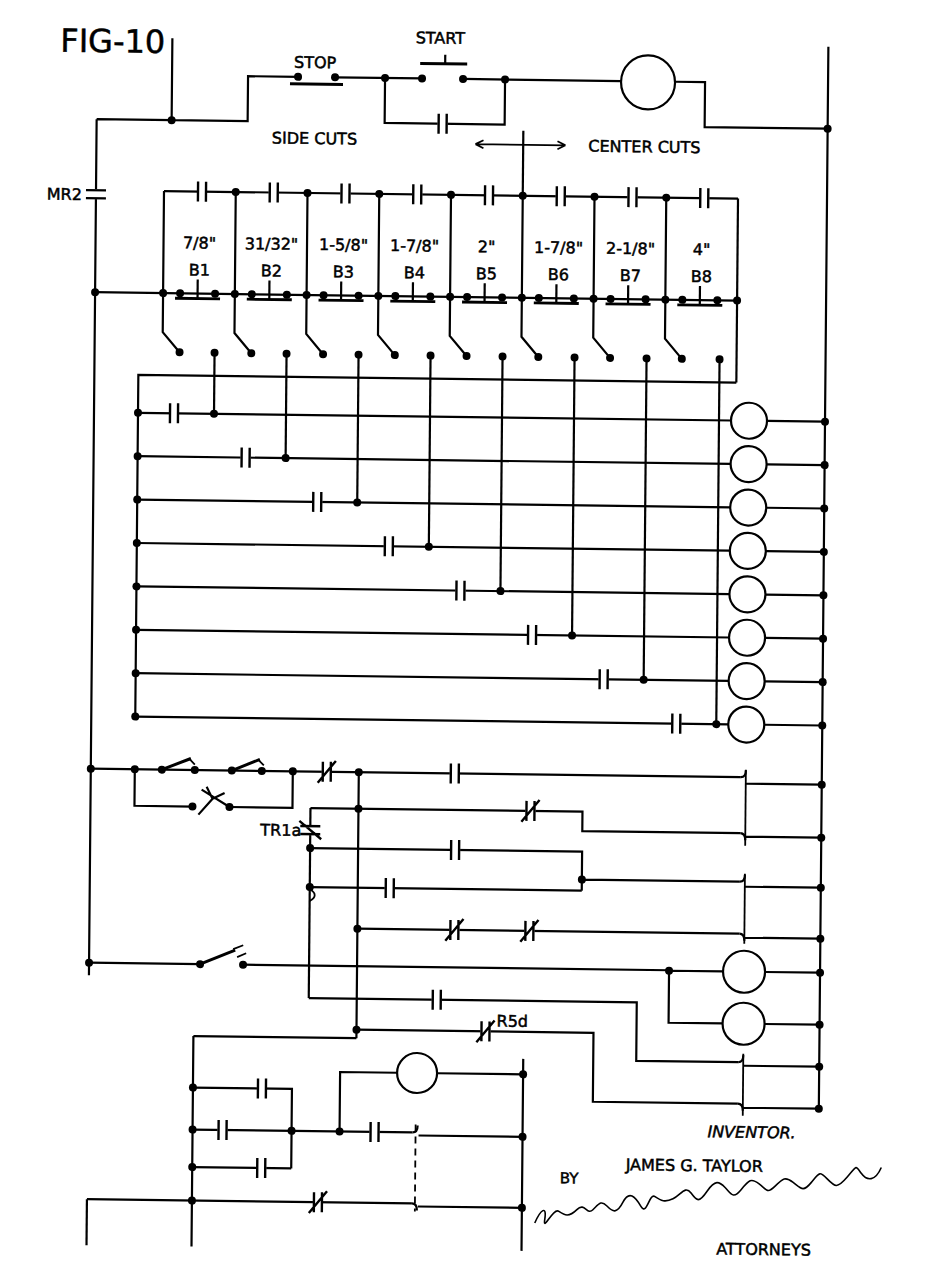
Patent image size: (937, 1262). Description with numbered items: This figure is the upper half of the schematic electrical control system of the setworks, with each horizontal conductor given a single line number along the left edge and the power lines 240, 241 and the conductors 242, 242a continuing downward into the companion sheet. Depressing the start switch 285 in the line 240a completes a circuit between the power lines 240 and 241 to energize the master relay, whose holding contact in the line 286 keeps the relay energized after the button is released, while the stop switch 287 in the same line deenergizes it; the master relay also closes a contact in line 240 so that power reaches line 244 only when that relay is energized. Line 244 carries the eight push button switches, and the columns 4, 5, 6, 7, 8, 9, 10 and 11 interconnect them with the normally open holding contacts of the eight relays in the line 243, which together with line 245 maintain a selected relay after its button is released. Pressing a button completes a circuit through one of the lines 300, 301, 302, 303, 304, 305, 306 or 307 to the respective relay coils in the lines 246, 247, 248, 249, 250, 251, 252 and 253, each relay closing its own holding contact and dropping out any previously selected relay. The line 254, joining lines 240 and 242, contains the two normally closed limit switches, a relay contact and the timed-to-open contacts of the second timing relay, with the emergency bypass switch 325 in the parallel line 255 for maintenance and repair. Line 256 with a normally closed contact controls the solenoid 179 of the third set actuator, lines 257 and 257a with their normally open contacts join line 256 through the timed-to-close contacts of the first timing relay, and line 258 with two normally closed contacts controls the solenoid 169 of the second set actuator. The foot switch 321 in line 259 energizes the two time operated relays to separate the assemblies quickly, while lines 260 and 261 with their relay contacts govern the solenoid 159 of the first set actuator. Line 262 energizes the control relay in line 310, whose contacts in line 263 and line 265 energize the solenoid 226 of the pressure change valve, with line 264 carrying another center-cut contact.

The power line 240 is at (168, 91).
The line 240a is at (383, 77).
The power line 241 is at (823, 56).
The electrical conductor 242 is at (362, 986).
The conductor 242a is at (94, 1227).
The line 243 is at (430, 184).
The line 244 is at (396, 296).
The line 245 is at (391, 544).
The line 246 is at (439, 423).
The line 247 is at (439, 466).
The line 248 is at (439, 509).
The line 249 is at (438, 553).
The line 250 is at (438, 597).
The line 251 is at (438, 640).
The line 252 is at (437, 683).
The line 253 is at (437, 726).
The line 254 is at (393, 762).
The conductor with switch 325 255 is at (169, 791).
The line 256 is at (520, 807).
The line 257 is at (500, 856).
The line 257a is at (306, 901).
The line 258 is at (527, 922).
The line 259 is at (433, 994).
The line 260 is at (503, 1018).
The line 261 is at (253, 1035).
The line 262 is at (223, 1109).
The line 263 is at (338, 1130).
The conductor with contact R8C 264 is at (221, 1156).
The line 265 is at (283, 1212).
The start switch 285 is at (468, 66).
The line 286 is at (503, 83).
The stop switch 287 is at (308, 88).
The line 300 is at (213, 391).
The line 301 is at (285, 391).
The line 302 is at (357, 391).
The line 303 is at (429, 391).
The line 304 is at (501, 391).
The conductor from pushbutton B6 305 is at (573, 391).
The conductor from pushbutton B7 306 is at (645, 391).
The conductor from pushbutton B8 307 is at (717, 439).
The line 310 is at (365, 1067).
The foot switch 321 is at (216, 960).
The emergency bypass switch 325 is at (209, 814).
The solenoid 159 is at (750, 1080).
The solenoid 169 is at (745, 901).
The solenoid 179 is at (745, 798).
The solenoid 226 is at (424, 1170).
The conductor line 4 is at (263, 275).
The conductor line 5 is at (335, 276).
The conductor line 6 is at (407, 277).
The conductor line 7 is at (479, 278).
The conductor line 8 is at (550, 279).
The conductor line 9 is at (622, 280).
The conductor line 10 is at (694, 281).
The conductor line 11 is at (751, 291).